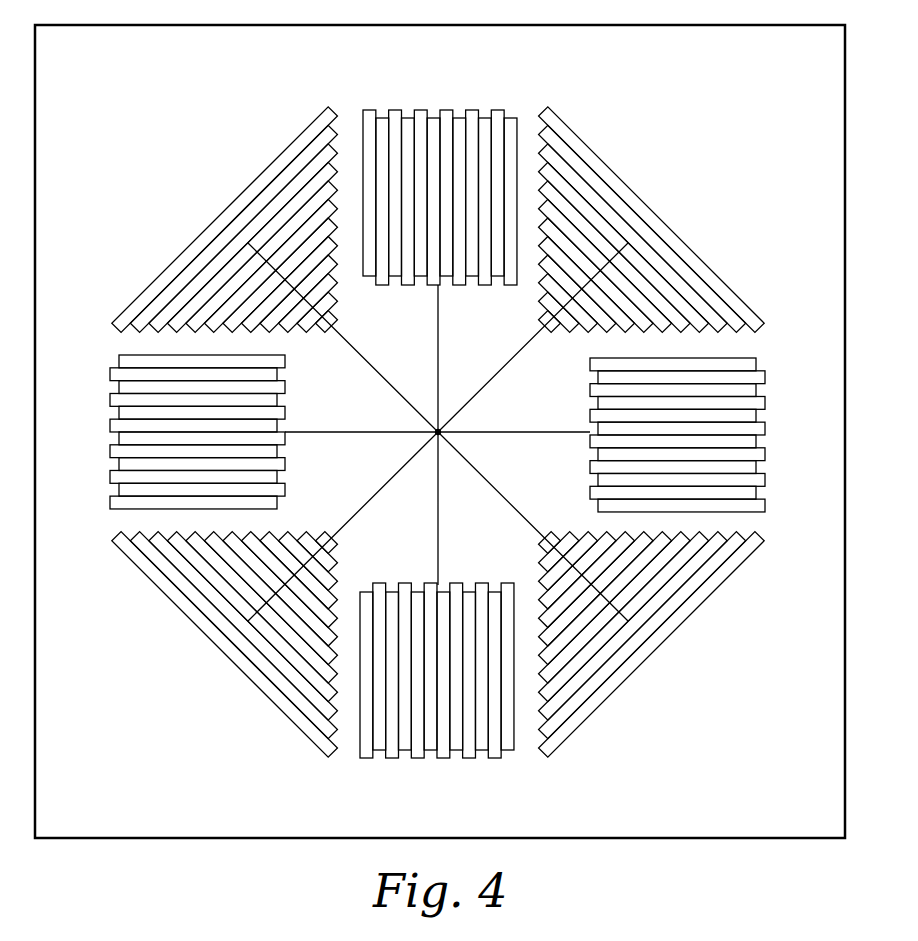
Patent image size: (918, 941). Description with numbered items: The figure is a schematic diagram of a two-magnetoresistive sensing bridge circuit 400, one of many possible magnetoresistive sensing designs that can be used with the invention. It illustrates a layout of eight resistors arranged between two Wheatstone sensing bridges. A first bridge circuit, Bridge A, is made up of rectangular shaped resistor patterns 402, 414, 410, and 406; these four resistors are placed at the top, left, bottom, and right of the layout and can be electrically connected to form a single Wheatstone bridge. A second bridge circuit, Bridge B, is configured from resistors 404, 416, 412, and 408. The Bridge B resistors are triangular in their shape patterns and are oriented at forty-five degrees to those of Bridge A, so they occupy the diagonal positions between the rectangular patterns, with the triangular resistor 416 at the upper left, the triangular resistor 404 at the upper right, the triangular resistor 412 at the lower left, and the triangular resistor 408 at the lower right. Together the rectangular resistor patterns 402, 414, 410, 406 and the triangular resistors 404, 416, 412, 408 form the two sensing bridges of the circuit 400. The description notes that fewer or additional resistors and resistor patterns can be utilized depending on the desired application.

The two-magnetoresistive sensing bridge circuit 400 is at (174, 66).
The rectangular shaped resistor pattern R1A 402 is at (506, 85).
The resistor R1B 404 is at (674, 158).
The rectangular shaped resistor pattern R4A 406 is at (782, 366).
The resistor R4B 408 is at (674, 721).
The rectangular shaped resistor pattern R3A 410 is at (504, 792).
The resistor R3B 412 is at (204, 722).
The rectangular shaped resistor pattern R2A 414 is at (90, 368).
The resistor R2B 416 is at (204, 152).